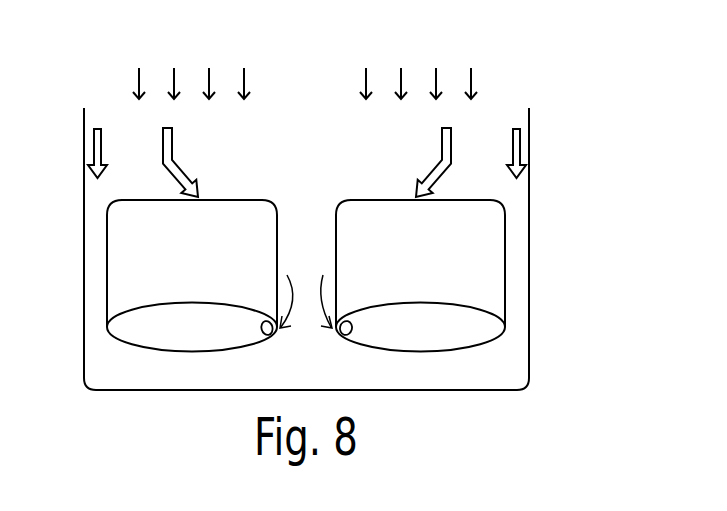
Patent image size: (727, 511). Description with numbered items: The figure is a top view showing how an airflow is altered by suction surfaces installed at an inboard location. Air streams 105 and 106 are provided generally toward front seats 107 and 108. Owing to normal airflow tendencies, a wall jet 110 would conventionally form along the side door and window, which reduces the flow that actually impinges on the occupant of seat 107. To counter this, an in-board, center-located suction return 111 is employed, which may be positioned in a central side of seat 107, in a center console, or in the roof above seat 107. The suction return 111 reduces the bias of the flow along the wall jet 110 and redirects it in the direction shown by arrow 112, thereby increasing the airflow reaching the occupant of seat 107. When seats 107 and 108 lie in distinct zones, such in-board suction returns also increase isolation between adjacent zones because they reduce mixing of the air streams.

The air stream 105 is at (259, 77).
The air stream 106 is at (358, 73).
The front seat 107 is at (208, 268).
The front seat 108 is at (433, 268).
The wall jet 110 is at (94, 151).
The in-board suction return 111 is at (262, 333).
The arrow 112 is at (172, 148).